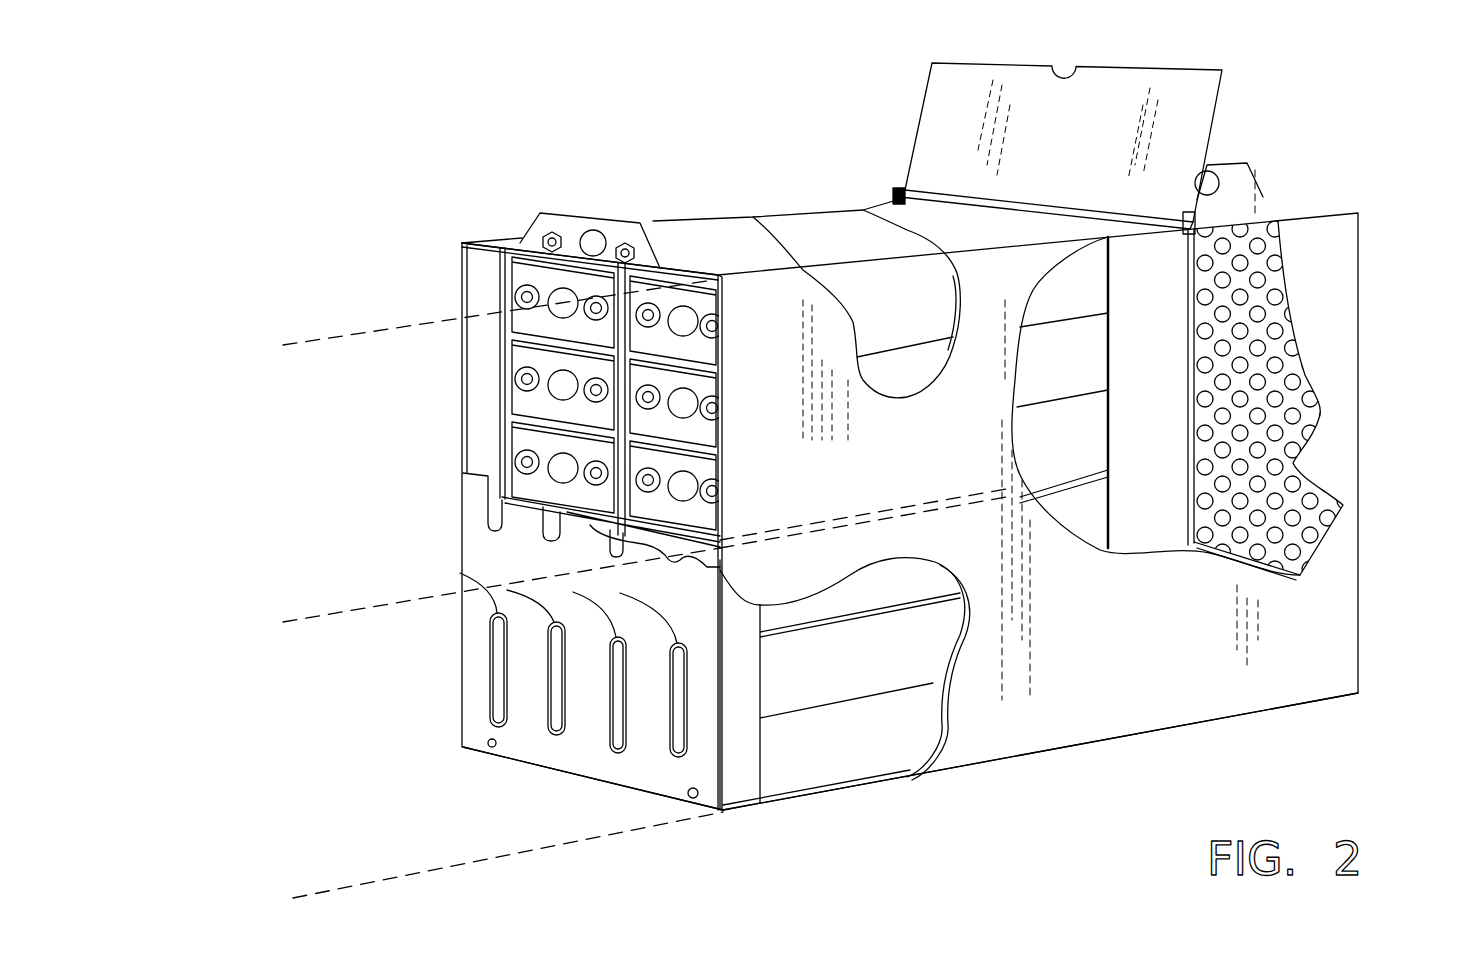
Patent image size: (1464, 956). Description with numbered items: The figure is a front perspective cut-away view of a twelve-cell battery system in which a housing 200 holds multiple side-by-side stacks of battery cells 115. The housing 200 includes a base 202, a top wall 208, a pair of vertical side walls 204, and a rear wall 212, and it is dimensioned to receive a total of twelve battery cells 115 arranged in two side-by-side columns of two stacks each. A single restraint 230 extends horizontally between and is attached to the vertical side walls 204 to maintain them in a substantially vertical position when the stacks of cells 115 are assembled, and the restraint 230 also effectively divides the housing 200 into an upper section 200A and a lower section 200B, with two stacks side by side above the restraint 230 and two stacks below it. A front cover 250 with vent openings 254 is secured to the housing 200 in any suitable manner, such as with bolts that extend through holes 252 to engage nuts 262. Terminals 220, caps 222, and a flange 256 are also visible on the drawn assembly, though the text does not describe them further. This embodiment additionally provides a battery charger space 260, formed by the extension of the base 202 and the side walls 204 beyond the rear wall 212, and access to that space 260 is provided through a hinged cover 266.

The housing 200 is at (712, 98).
The section 200A is at (283, 345).
The section 200B is at (283, 627).
The base 202 is at (980, 768).
The vertical side walls 204 is at (1327, 643).
The top wall 208 is at (802, 240).
The rear wall 212 is at (1113, 517).
The battery terminals 220 is at (518, 296).
The cell vent cap 222 is at (520, 378).
The restraint 230 is at (950, 530).
The front cover 250 is at (470, 655).
The holes 252 is at (488, 746).
The vent openings 254 is at (507, 590).
The base flange 256 is at (773, 803).
The battery charger space 260 is at (1173, 383).
The nuts 262 is at (535, 225).
The hinged cover 266 is at (975, 107).
The battery cells 115 is at (1050, 311).